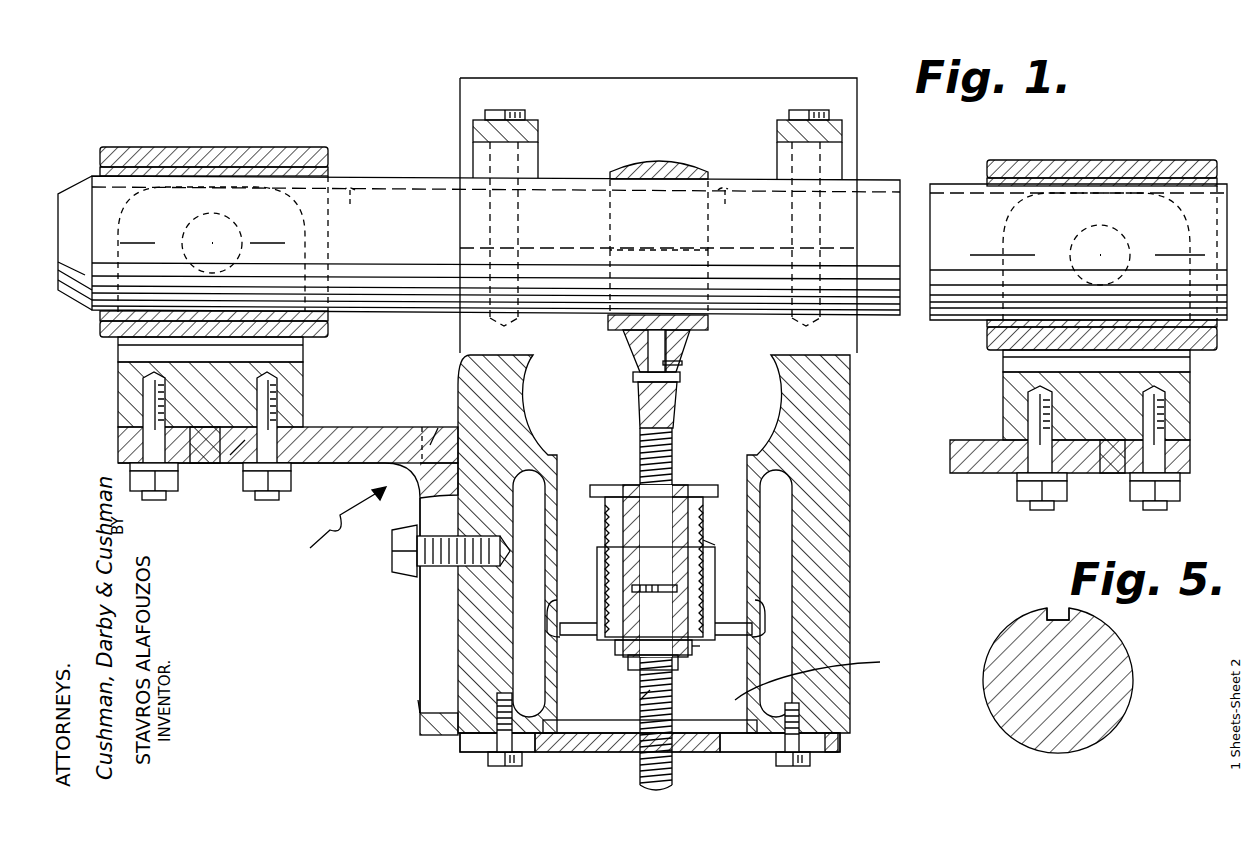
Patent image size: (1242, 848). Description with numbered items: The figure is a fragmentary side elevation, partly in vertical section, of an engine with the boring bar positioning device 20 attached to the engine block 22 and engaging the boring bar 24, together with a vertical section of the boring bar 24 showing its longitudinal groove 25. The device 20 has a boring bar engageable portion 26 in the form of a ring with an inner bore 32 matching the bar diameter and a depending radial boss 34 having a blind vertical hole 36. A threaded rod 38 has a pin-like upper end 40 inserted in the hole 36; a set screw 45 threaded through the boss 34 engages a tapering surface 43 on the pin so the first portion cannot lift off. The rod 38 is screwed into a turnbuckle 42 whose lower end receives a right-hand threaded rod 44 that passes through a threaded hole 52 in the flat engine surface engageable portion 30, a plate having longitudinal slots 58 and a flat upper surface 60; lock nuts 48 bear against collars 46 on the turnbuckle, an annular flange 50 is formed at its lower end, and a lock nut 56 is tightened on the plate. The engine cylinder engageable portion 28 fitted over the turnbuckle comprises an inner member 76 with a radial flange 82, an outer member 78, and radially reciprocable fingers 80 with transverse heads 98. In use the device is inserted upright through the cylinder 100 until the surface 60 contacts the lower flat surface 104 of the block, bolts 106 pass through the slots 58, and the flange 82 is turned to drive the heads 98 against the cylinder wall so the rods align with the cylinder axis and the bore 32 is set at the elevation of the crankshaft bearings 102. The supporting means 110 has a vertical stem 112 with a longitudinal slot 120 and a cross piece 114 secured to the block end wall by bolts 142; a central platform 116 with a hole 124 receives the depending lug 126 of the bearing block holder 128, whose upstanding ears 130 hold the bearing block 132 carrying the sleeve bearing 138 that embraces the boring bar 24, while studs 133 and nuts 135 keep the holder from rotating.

In FIG. 1, the boring bar positioning device 20 is at (680, 426).
In FIG. 1, the engine block 22 is at (858, 573).
In FIG. 1, the boring bar 24 is at (405, 180).
In FIG. 1, the longitudinal groove 25 is at (352, 207).
In FIG. 5, the longitudinal groove 25 is at (1057, 612).
In FIG. 1, the boring bar engageable portion 26 is at (688, 162).
In FIG. 1, the engine cylinder engageable portion 28 is at (710, 543).
In FIG. 1, the flat engine surface engageable portion 30 is at (606, 753).
In FIG. 1, the inner bore 32 is at (622, 200).
In FIG. 1, the depending radial boss 34 is at (632, 352).
In FIG. 1, the blind vertical hole 36 is at (648, 372).
In FIG. 1, the threaded rod 38 is at (640, 440).
In FIG. 1, the pin-like upper end 40 is at (672, 350).
In FIG. 1, the turnbuckle 42 is at (622, 532).
In FIG. 1, the tapering surface 43 is at (668, 360).
In FIG. 1, the right-hand threaded rod 44 is at (640, 700).
In FIG. 1, the set screw 45 is at (683, 365).
In FIG. 1, the collar 46 is at (680, 668).
In FIG. 1, the lock nut 48 is at (630, 656).
In FIG. 1, the annular flange 50 is at (700, 646).
In FIG. 1, the threaded hole 52 is at (672, 752).
In FIG. 1, the lock nut 56 is at (625, 722).
In FIG. 1, the longitudinal slot 58 is at (556, 753).
In FIG. 1, the upper surface 60 is at (418, 700).
In FIG. 1, the inner member 76 is at (690, 500).
In FIG. 1, the outer member 78 is at (598, 567).
In FIG. 1, the radially reciprocable finger 80 is at (588, 630).
In FIG. 1, the radial flange 82 is at (598, 485).
In FIG. 1, the transverse head 98 is at (540, 630).
In FIG. 1, the cylinder 100 is at (824, 676).
In FIG. 1, the crankshaft bearing 102 is at (528, 135).
In FIG. 1, the lower flat surface 104 is at (500, 775).
In FIG. 1, the bolt 106 is at (505, 766).
In FIG. 1, the supporting means 110 is at (335, 528).
In FIG. 1, the vertical stem 112 is at (424, 727).
In FIG. 1, the cross piece 114 is at (432, 440).
In FIG. 1, the central platform 116 is at (365, 427).
In FIG. 1, the longitudinal slot 120 is at (432, 622).
In FIG. 1, the hole 124 is at (205, 470).
In FIG. 1, the depending lug 126 is at (215, 450).
In FIG. 1, the bearing block holder 128 is at (303, 395).
In FIG. 1, the upstanding ear 130 is at (318, 180).
In FIG. 1, the bearing block 132 is at (205, 150).
In FIG. 1, the stud 133 is at (152, 480).
In FIG. 1, the nut 135 is at (175, 495).
In FIG. 1, the sleeve bearing 138 is at (330, 160).
In FIG. 1, the bolt 142 is at (405, 562).